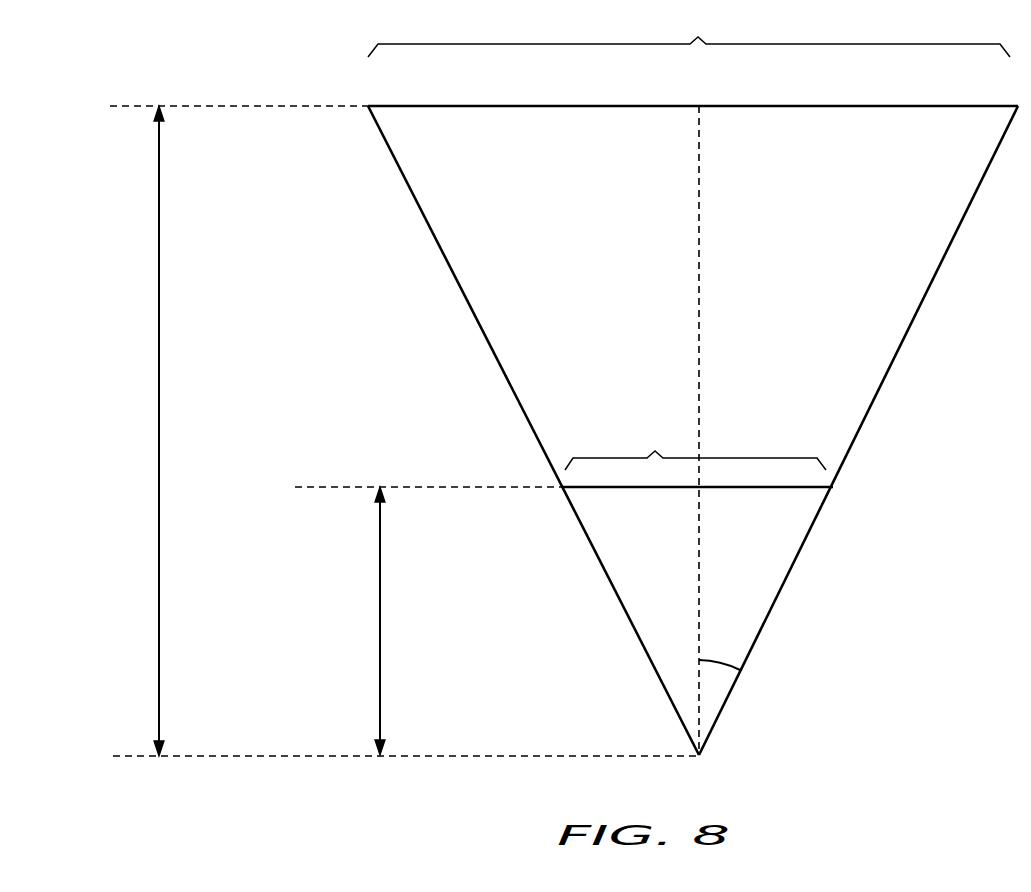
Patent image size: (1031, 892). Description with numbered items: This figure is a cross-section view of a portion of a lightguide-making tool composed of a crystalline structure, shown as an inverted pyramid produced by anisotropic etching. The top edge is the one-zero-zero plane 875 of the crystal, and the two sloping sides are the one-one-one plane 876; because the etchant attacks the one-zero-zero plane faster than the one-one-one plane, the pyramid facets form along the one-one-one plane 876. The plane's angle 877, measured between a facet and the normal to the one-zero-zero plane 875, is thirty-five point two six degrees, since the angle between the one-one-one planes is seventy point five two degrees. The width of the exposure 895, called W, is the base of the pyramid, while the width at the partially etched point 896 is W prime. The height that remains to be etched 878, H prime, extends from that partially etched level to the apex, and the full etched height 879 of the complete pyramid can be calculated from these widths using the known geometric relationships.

The (100) plane 875 is at (803, 106).
The (111) plane 876 is at (467, 305).
The plane's angle 877 is at (722, 662).
The height that remains to be etched 878 is at (380, 620).
The etched height 879 is at (159, 396).
The width of the exposure 895 is at (689, 29).
The width at the partially etched point 896 is at (697, 453).